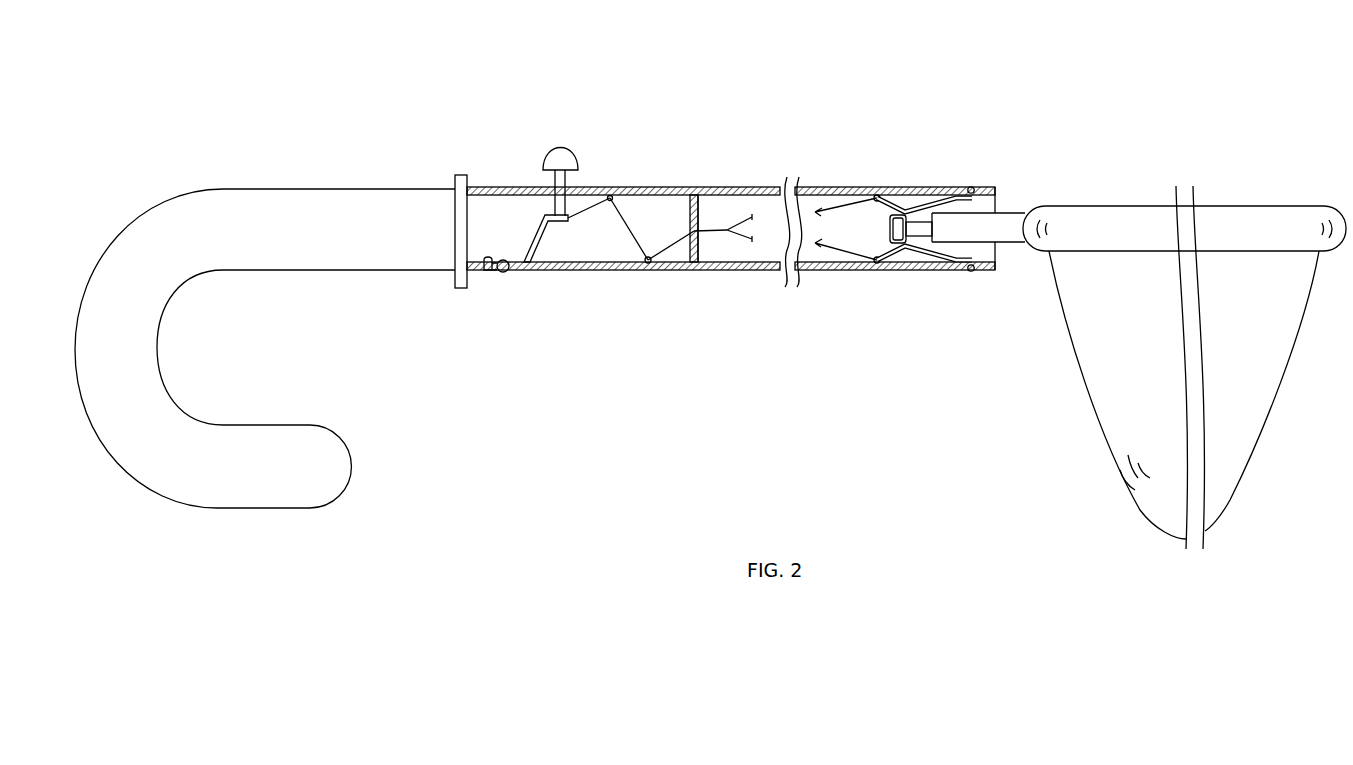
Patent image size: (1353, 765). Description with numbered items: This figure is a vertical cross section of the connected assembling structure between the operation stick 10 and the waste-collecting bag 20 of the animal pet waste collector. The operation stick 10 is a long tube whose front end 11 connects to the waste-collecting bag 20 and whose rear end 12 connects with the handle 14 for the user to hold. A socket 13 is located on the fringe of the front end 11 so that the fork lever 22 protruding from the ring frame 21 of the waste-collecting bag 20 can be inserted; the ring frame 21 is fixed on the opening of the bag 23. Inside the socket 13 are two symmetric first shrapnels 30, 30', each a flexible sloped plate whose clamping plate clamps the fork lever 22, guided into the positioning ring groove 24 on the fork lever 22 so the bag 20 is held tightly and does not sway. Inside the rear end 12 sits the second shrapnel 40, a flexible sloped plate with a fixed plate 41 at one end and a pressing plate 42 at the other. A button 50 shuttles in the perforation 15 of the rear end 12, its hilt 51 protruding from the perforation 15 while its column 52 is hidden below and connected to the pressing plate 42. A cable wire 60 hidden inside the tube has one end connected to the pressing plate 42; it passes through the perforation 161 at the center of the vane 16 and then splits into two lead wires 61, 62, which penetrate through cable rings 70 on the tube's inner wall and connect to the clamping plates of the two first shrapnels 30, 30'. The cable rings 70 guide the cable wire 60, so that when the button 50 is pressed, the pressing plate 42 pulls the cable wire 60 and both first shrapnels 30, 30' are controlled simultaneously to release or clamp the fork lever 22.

The operation stick 10 is at (746, 153).
The front end 11 is at (970, 188).
The rear end 12 is at (470, 187).
The socket 13 is at (998, 205).
The handle 14 is at (200, 212).
The perforation 15 is at (553, 190).
The vane 16 is at (693, 196).
The perforation 161 is at (703, 215).
The waste-collecting bag 20 is at (1139, 312).
The ring frame 21 is at (1126, 219).
The fork lever 22 is at (1000, 235).
The bag 23 is at (1110, 421).
The positioning ring groove 24 is at (900, 245).
The first shrapnel 30 is at (924, 176).
The first shrapnel 30' is at (924, 294).
The second shrapnel 40 is at (506, 307).
The fixed plate 41 is at (488, 277).
The pressing plate 42 is at (560, 225).
The button 50 is at (565, 202).
The hilt 51 is at (574, 153).
The column 52 is at (577, 212).
The cable wire 60 is at (724, 235).
The lead wire 61 is at (835, 210).
The lead wire 62 is at (828, 250).
The cable ring 70 is at (645, 265).